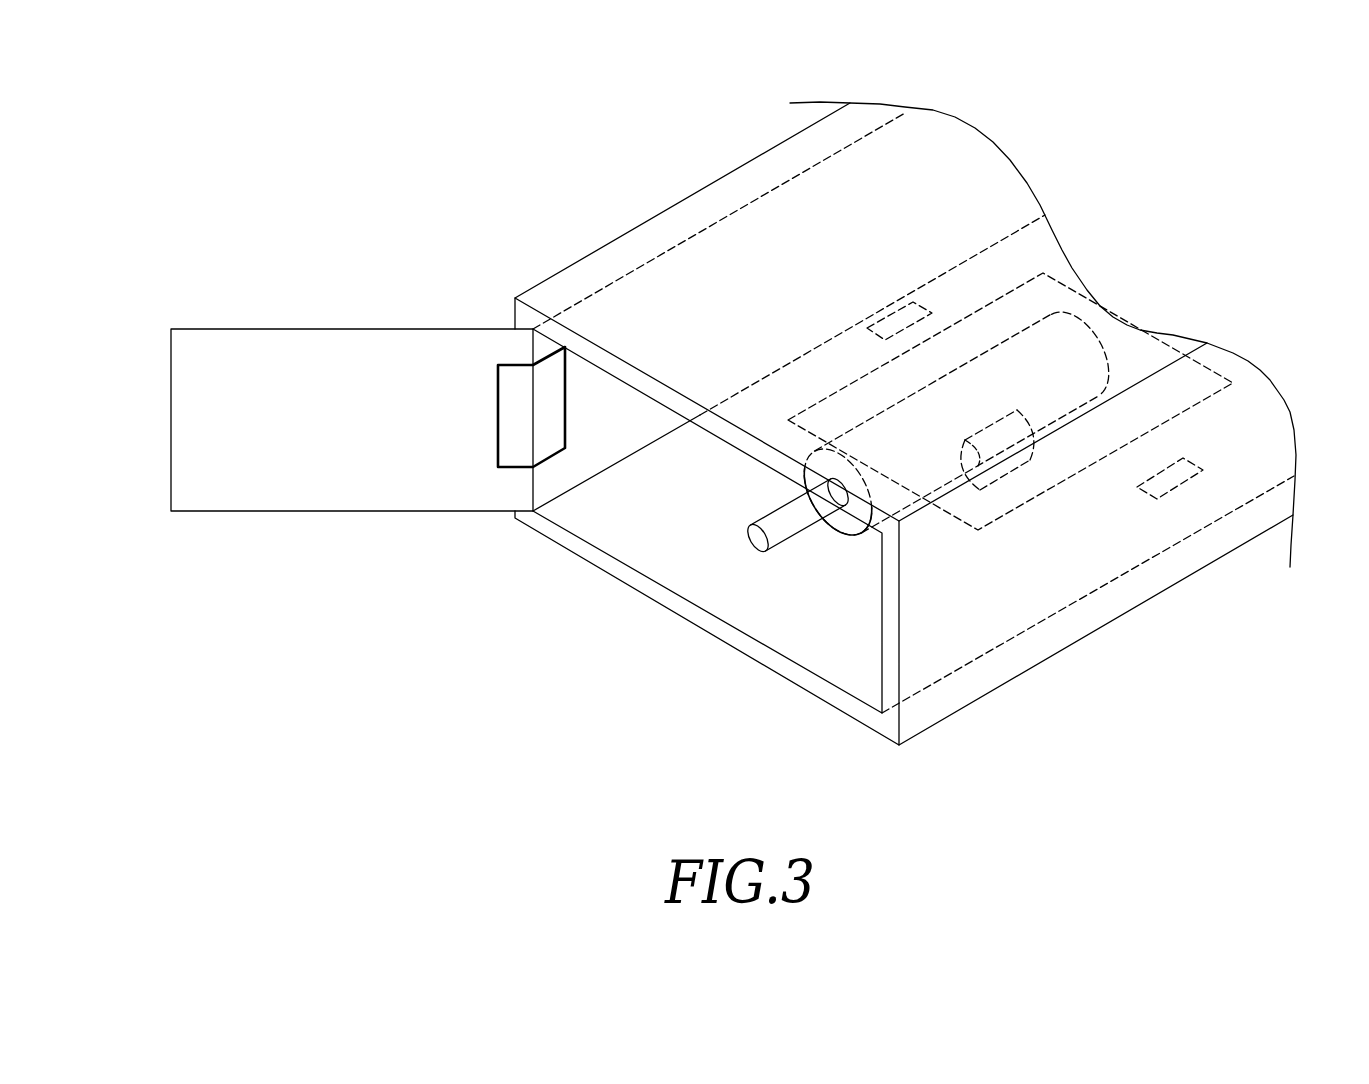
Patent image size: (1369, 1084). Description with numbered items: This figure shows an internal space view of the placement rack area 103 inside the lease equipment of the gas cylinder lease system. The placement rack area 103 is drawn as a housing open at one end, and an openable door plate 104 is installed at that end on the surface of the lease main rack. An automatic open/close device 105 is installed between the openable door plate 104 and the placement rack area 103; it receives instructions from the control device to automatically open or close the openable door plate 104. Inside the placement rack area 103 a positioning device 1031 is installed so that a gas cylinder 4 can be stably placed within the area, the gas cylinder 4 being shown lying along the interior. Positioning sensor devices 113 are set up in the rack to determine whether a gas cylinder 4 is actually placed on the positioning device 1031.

The placement rack area 103 is at (847, 633).
The openable door plate 104 is at (233, 477).
The automatic open/close device 105 is at (513, 363).
The positioning sensor device 113 is at (893, 312).
The positioning device 1031 is at (1010, 473).
The gas cylinder 4 is at (750, 537).